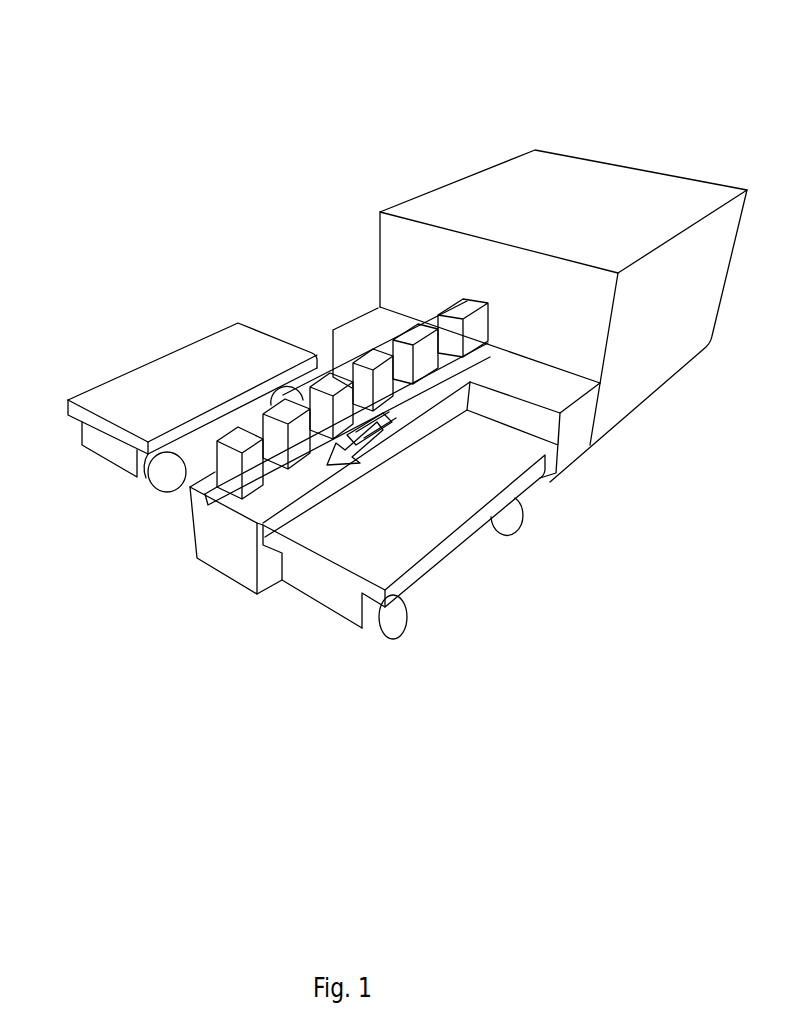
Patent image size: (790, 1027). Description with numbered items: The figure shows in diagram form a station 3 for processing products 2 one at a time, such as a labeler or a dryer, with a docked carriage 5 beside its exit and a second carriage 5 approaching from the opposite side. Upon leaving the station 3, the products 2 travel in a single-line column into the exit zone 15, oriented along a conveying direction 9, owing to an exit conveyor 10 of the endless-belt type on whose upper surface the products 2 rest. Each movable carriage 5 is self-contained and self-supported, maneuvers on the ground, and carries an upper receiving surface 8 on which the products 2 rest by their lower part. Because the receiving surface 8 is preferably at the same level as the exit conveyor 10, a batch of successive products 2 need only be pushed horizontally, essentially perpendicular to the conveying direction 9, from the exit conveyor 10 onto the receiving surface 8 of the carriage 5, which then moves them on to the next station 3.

The exit zone 15 is at (157, 140).
The station 3 is at (601, 122).
The products 2 is at (233, 470).
The movable carriage 5 is at (192, 382).
The receiving surface 8 is at (130, 410).
The conveying direction 9 is at (323, 460).
The exit conveyor 10 is at (422, 405).